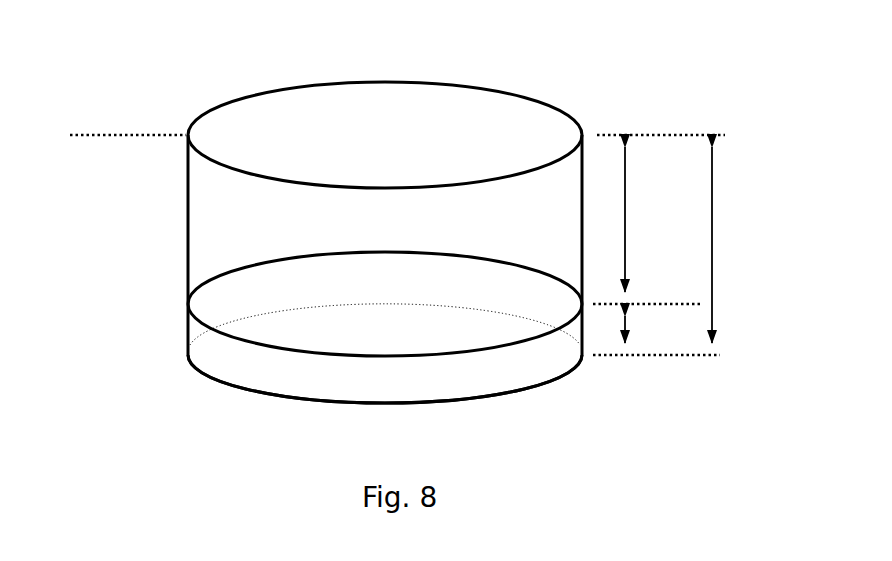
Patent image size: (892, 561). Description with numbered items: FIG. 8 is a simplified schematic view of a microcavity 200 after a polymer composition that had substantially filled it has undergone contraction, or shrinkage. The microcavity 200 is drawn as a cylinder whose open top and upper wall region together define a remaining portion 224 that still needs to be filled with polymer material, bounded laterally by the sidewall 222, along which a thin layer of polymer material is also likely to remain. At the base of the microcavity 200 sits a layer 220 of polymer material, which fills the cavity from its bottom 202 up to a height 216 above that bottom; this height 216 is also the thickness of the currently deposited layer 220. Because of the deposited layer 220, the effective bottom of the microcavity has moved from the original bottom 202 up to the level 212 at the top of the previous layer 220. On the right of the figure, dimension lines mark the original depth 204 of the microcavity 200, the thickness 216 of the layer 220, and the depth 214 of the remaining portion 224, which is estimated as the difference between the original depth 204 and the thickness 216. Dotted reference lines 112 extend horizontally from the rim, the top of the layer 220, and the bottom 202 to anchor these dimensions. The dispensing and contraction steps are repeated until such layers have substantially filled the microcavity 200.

The microcavity 200 is at (226, 70).
The remaining portion 224 is at (361, 88).
The sidewall 222 is at (175, 221).
The top of the previous layer 212 is at (176, 306).
The layer of polymer material 220 is at (205, 353).
The bottom 202 is at (516, 394).
The reference plane 112 is at (105, 122).
The depth of the remaining portion 214 is at (636, 218).
The height of the layer 216 is at (643, 333).
The original depth 204 is at (724, 249).